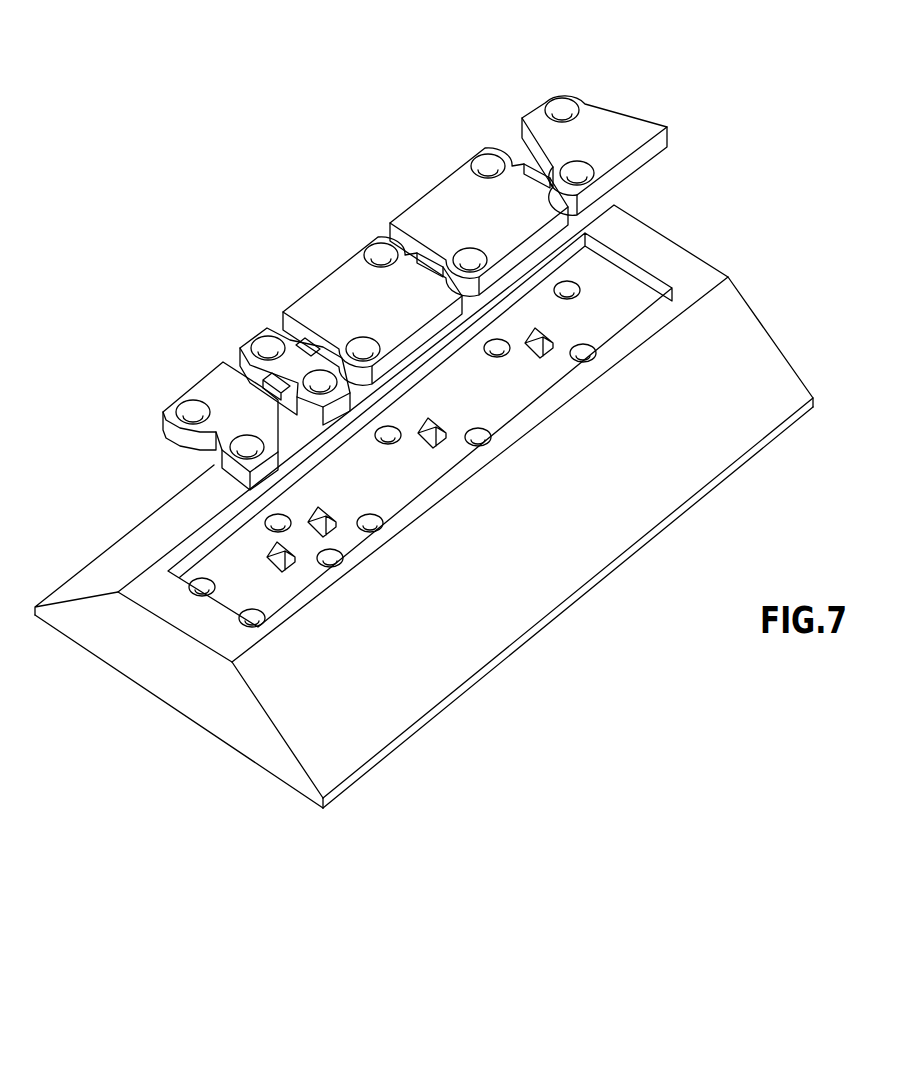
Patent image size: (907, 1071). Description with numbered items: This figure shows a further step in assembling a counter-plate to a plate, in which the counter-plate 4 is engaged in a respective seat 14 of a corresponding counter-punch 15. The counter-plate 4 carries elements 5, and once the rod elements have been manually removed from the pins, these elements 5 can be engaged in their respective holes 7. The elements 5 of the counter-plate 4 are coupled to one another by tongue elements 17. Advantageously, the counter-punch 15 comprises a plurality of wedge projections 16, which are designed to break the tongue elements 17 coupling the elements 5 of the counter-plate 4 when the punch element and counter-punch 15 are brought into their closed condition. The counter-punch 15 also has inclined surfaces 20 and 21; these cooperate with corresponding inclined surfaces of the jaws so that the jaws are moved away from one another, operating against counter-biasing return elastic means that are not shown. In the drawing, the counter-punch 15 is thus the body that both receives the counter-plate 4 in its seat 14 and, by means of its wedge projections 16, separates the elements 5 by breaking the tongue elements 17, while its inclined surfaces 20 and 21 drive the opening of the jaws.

The counter-plate 4 is at (627, 110).
The elements of the counter-plate 5 is at (350, 288).
The holes 7 is at (380, 258).
The seat 14 is at (487, 395).
The counter-punch 15 is at (192, 687).
The wedge projections 16 is at (553, 353).
The tongue elements 17 is at (250, 383).
The inclined surface of the counter-punch 20 is at (147, 545).
The inclined surface of the counter-punch 21 is at (345, 713).